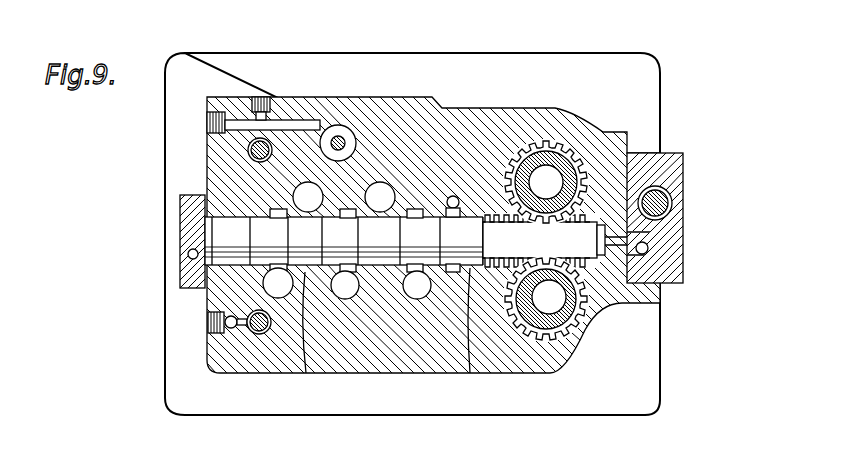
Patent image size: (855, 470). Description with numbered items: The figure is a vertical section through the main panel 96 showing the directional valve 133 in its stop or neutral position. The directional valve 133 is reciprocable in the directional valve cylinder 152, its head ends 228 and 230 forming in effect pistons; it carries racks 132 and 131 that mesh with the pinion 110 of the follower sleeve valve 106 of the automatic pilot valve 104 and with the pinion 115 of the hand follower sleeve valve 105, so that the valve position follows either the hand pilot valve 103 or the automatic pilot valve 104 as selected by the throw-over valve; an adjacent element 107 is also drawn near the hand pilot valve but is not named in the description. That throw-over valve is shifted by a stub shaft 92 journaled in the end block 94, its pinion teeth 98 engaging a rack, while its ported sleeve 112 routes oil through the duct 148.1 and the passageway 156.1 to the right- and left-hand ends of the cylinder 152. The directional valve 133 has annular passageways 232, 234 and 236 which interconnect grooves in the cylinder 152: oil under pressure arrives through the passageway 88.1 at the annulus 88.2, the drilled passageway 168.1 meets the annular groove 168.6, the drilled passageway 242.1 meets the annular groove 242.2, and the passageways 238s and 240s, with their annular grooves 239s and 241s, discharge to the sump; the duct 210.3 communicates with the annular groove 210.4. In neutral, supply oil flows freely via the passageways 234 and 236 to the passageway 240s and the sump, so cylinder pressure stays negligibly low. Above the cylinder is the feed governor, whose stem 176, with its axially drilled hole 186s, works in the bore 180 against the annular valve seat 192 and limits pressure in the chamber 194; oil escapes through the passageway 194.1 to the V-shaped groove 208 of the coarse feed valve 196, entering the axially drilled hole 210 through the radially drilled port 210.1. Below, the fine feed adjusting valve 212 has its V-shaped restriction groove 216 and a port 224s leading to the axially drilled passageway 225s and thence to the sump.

The ported sleeve 112 is at (673, 75).
The axially drilled hole 210 is at (207, 150).
The head end 230 is at (185, 213).
The passageway 156.1 is at (188, 254).
The rack 131 is at (686, 160).
The head end 228 is at (672, 223).
The duct 148.1 is at (650, 247).
The stub shaft 92 is at (663, 200).
The pinion teeth 98 is at (663, 210).
The end block 94 is at (685, 262).
The directional valve cylinder 152 is at (665, 280).
The rack 132 is at (665, 303).
The hand follower sleeve valve 105 is at (650, 153).
The annular passageway 232 is at (344, 241).
The annular groove 239s is at (301, 241).
The annular passageway 234 is at (367, 241).
The annular passageway 236 is at (440, 241).
The directional valve 133 is at (485, 243).
The hand pilot valve 103 is at (548, 141).
The pinion 115 is at (578, 132).
The gear housing 107 is at (590, 132).
The pinion 110 is at (580, 302).
The automatic pilot valve 104 is at (596, 346).
The main panel 96 is at (550, 373).
The follower sleeve valve 106 is at (478, 318).
The drilled passageway 168.1 is at (308, 197).
The drilled passageway 242.1 is at (380, 197).
The passageway 238s is at (270, 285).
The passageway 88.1 is at (344, 299).
The annular groove 242.2 is at (410, 296).
The duct 210.3 is at (454, 195).
The annular groove 241s is at (428, 208).
The V-shaped groove 208 is at (248, 115).
The bore 180 is at (290, 121).
The radially drilled port 210.1 is at (270, 79).
The passageway 194.1 is at (295, 100).
The V-shaped restriction groove 216 is at (262, 334).
The annular valve seat 192 is at (338, 140).
The stem 176 is at (343, 138).
The axially drilled hole 186s is at (343, 122).
The annulus 88.2 is at (372, 183).
The coarse feed valve 196 is at (320, 158).
The chamber 194 is at (200, 194).
The port 224s is at (225, 322).
The axially drilled passageway 225s is at (256, 331).
The fine feed adjusting valve 212 is at (109, 382).
The annular groove 168.6 is at (308, 373).
The passageway 240s is at (442, 272).
The connecting passageway 210.4 is at (470, 373).